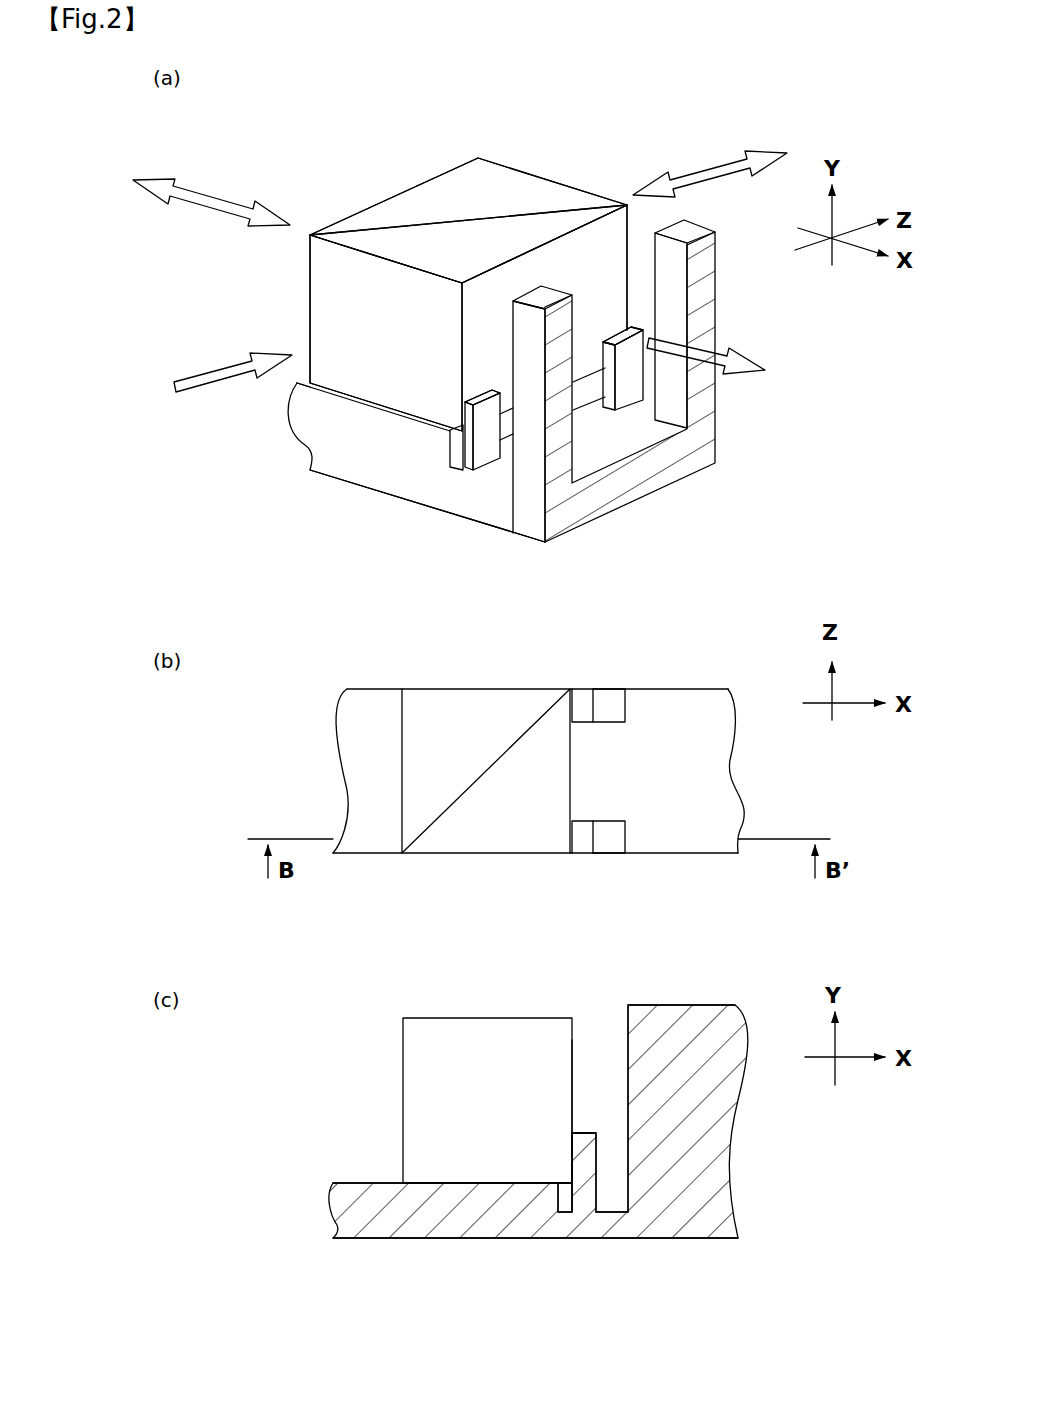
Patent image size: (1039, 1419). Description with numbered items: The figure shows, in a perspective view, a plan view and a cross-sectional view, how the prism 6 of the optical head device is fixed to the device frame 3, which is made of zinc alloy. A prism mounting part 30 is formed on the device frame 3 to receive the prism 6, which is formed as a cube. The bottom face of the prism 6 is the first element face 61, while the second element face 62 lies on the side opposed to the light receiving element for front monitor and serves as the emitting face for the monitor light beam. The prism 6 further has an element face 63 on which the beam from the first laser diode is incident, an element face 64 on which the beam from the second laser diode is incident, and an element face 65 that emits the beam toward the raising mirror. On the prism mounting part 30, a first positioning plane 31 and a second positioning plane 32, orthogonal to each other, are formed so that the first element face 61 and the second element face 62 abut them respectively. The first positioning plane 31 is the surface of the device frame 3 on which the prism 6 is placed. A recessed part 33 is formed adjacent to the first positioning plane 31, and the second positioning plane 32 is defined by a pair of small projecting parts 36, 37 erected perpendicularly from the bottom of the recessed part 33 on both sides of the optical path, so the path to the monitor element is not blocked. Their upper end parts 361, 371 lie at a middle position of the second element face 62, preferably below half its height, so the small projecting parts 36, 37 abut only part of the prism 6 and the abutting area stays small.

The device frame 3 is at (387, 468).
The prism mounting part 30 is at (367, 467).
The first positioning plane 31 is at (363, 402).
The second positioning plane 32 is at (460, 425).
The recessed part 33 is at (505, 470).
The small projecting part 36 is at (483, 455).
The small projecting part 37 is at (627, 358).
The upper end part 361 is at (485, 392).
The upper end part 371 is at (630, 332).
The prism 6 is at (290, 302).
The first element face 61 is at (340, 395).
The second element face 62 is at (613, 238).
The element face 63 is at (450, 167).
The element face 64 is at (327, 283).
The element face 65 is at (522, 170).